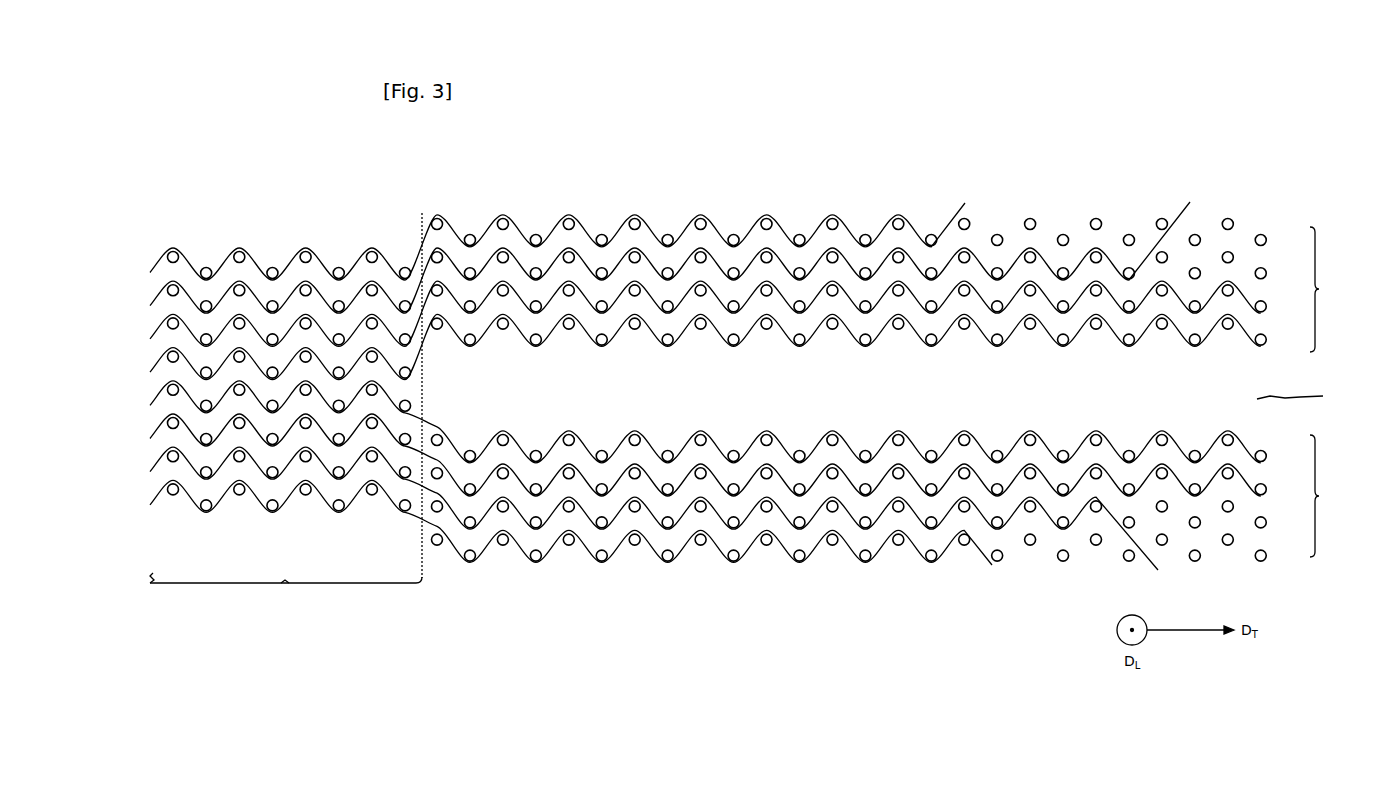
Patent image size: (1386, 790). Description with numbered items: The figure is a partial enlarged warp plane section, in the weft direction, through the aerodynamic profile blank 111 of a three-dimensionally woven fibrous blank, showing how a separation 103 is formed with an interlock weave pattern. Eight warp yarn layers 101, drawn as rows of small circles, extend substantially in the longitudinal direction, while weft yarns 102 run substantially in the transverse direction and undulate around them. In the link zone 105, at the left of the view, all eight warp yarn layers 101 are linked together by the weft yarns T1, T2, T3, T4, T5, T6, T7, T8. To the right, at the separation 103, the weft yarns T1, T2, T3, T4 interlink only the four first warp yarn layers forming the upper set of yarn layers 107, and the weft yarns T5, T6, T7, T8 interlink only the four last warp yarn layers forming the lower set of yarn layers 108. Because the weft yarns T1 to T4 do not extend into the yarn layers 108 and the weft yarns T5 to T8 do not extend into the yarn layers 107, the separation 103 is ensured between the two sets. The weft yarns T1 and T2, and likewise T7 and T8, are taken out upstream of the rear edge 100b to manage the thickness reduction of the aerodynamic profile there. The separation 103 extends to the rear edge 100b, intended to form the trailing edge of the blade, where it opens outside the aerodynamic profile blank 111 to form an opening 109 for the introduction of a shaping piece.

The warp yarn layers 101 is at (717, 390).
The weft yarns 102 is at (706, 381).
The separation 103 is at (682, 398).
The link zone 105 is at (300, 616).
The set of yarn layers 107 is at (1332, 289).
The set of yarn layers 108 is at (1332, 496).
The opening 109 is at (1306, 395).
The aerodynamic profile blank 111 is at (844, 118).
The rear edge 100b is at (1297, 203).
The weft yarn T1 is at (539, 232).
The weft yarn T2 is at (652, 251).
The weft yarn T3 is at (705, 313).
The weft yarn T4 is at (706, 346).
The weft yarn T5 is at (705, 422).
The weft yarn T6 is at (706, 467).
The weft yarn T7 is at (648, 508).
The weft yarn T8 is at (572, 528).